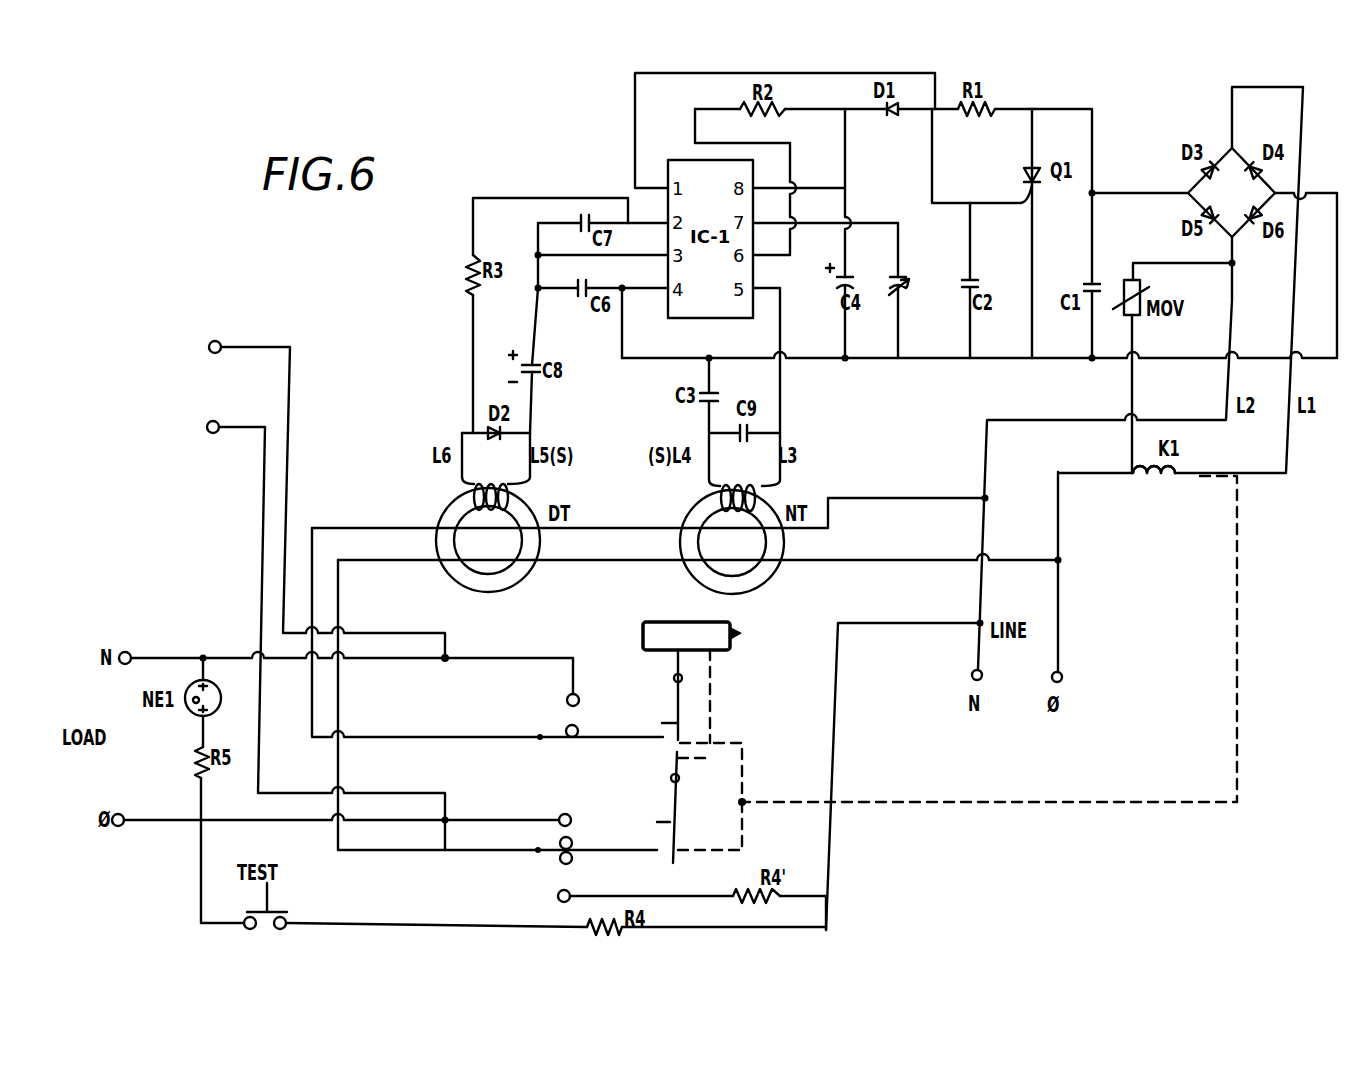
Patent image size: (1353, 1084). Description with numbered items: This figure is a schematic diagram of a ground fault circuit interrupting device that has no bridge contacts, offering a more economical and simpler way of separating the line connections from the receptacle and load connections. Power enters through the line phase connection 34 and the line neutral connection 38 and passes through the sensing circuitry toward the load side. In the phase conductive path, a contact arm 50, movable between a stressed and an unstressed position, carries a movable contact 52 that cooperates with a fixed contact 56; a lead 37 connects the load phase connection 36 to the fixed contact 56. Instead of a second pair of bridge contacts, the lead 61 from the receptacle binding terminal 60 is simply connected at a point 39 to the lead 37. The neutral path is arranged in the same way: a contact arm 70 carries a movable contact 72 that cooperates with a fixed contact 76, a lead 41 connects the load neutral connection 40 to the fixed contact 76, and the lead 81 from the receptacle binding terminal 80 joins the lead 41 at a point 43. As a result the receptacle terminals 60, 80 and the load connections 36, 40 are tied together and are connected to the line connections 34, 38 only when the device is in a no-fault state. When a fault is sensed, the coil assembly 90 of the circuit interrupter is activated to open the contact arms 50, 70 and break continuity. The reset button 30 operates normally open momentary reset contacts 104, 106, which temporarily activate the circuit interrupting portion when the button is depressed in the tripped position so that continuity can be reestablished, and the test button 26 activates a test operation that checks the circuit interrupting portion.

The test button 26 is at (322, 885).
The reset button 30 is at (738, 627).
The line phase connection 34 is at (1063, 677).
The load phase connection 36 is at (121, 828).
The lead 37 is at (378, 822).
The line neutral connection 38 is at (971, 676).
The point 39 is at (444, 850).
The load neutral connection 40 is at (129, 652).
The lead 41 is at (390, 660).
The point 43 is at (449, 655).
The contact arm 50 is at (656, 853).
The movable contact 52 is at (560, 842).
The fixed contact 56 is at (560, 815).
The binding terminal 60 is at (207, 428).
The lead 61 is at (383, 793).
The contact arm 70 is at (640, 743).
The movable contact 72 is at (566, 727).
The fixed contact 76 is at (567, 697).
The binding terminal 80 is at (210, 343).
The lead 81 is at (403, 633).
The coil assembly 90 is at (1170, 483).
The reset contact 104 is at (558, 860).
The reset contact 106 is at (558, 900).